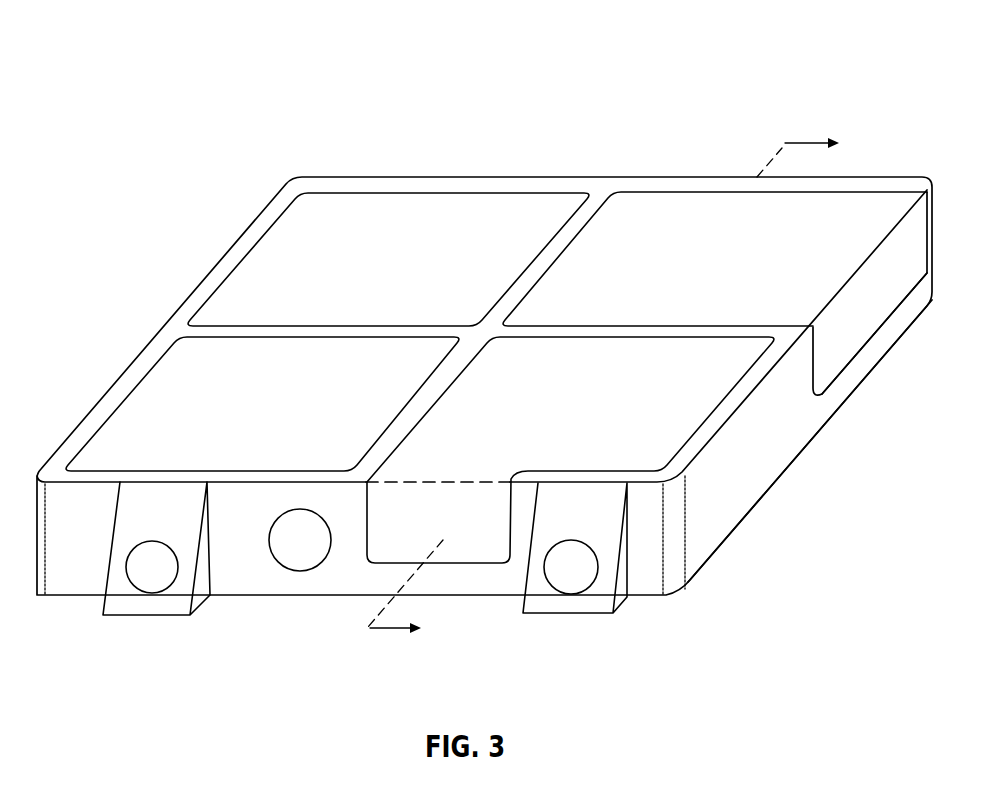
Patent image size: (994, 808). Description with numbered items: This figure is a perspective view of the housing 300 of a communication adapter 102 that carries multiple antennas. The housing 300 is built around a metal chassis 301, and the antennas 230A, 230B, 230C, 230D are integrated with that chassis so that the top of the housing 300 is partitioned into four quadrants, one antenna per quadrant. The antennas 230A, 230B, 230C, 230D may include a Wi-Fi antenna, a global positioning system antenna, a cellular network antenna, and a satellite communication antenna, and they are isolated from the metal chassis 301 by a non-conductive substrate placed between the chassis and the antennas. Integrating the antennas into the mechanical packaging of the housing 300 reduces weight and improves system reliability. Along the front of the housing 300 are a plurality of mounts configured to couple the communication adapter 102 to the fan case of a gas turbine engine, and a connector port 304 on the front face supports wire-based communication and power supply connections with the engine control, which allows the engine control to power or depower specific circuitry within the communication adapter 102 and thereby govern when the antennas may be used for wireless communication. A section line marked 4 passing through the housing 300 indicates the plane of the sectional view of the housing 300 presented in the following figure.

The communication adapter 102 is at (194, 53).
The housing 300 is at (121, 344).
The metal chassis 301 is at (768, 450).
The connector port 304 is at (300, 553).
The antenna 230A is at (668, 238).
The antenna 230B is at (615, 385).
The antenna 230C is at (403, 240).
The antenna 230D is at (228, 393).
The sectional view 4 is at (614, 387).